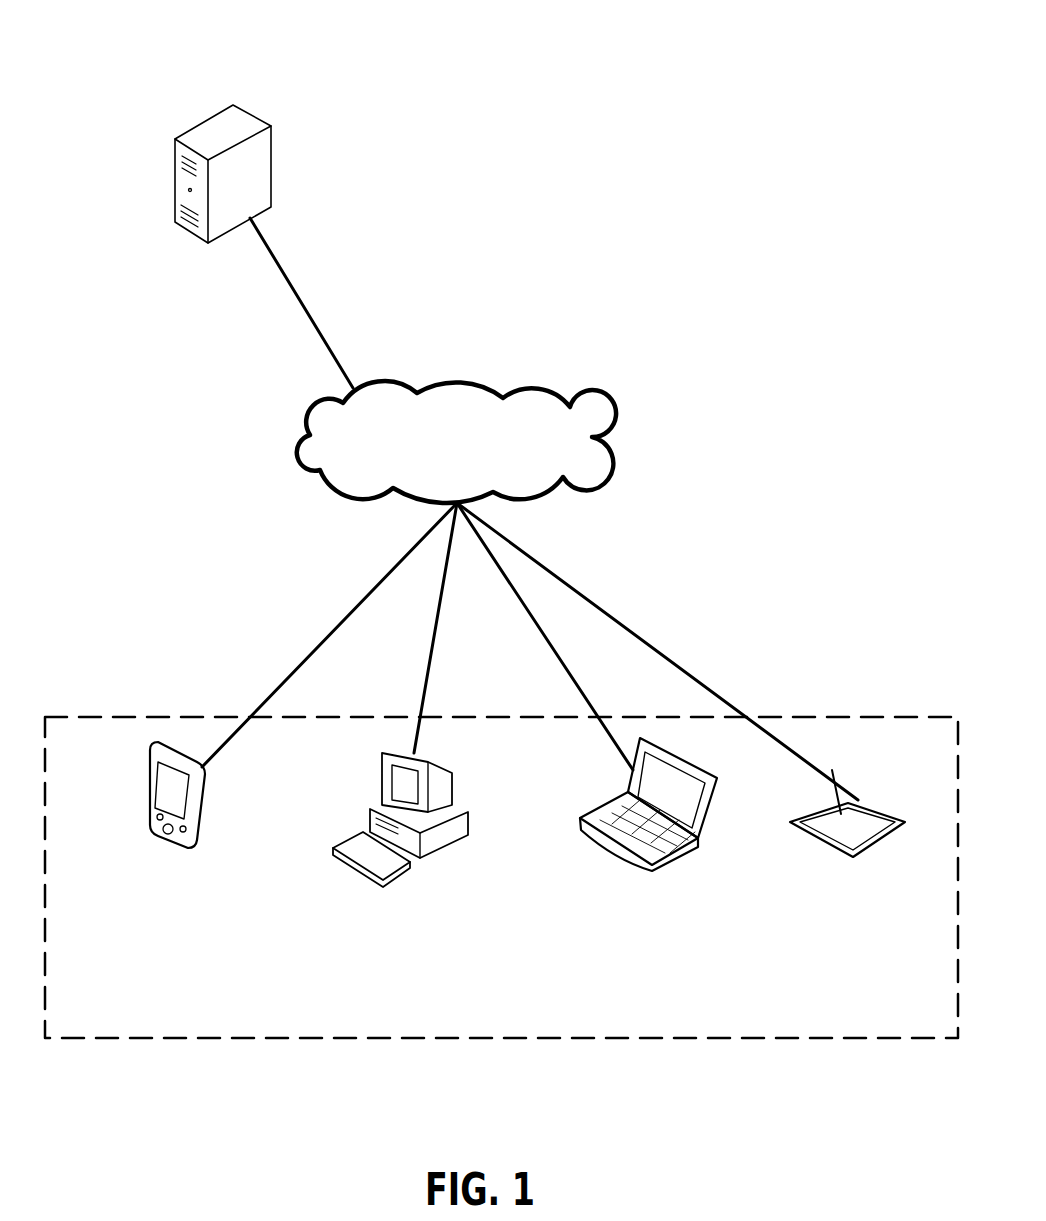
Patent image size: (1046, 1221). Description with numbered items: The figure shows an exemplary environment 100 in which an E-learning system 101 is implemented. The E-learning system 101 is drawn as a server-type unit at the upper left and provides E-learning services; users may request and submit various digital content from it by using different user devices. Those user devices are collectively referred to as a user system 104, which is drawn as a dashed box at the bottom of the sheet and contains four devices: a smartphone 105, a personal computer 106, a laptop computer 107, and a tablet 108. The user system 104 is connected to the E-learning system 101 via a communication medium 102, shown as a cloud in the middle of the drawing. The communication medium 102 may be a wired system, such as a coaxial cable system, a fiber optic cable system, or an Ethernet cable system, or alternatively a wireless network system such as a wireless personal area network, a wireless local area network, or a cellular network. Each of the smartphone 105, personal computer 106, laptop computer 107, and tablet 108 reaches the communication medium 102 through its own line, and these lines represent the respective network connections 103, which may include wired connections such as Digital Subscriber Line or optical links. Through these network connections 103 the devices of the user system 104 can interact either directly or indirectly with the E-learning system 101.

The environment 100 is at (487, 89).
The E-learning system 101 is at (99, 147).
The communication medium 102 is at (443, 484).
The network connections 103 is at (199, 631).
The user system 104 is at (483, 1022).
The smartphone 105 is at (172, 836).
The personal computer 106 is at (383, 882).
The laptop computer 107 is at (652, 870).
The tablet 108 is at (853, 860).